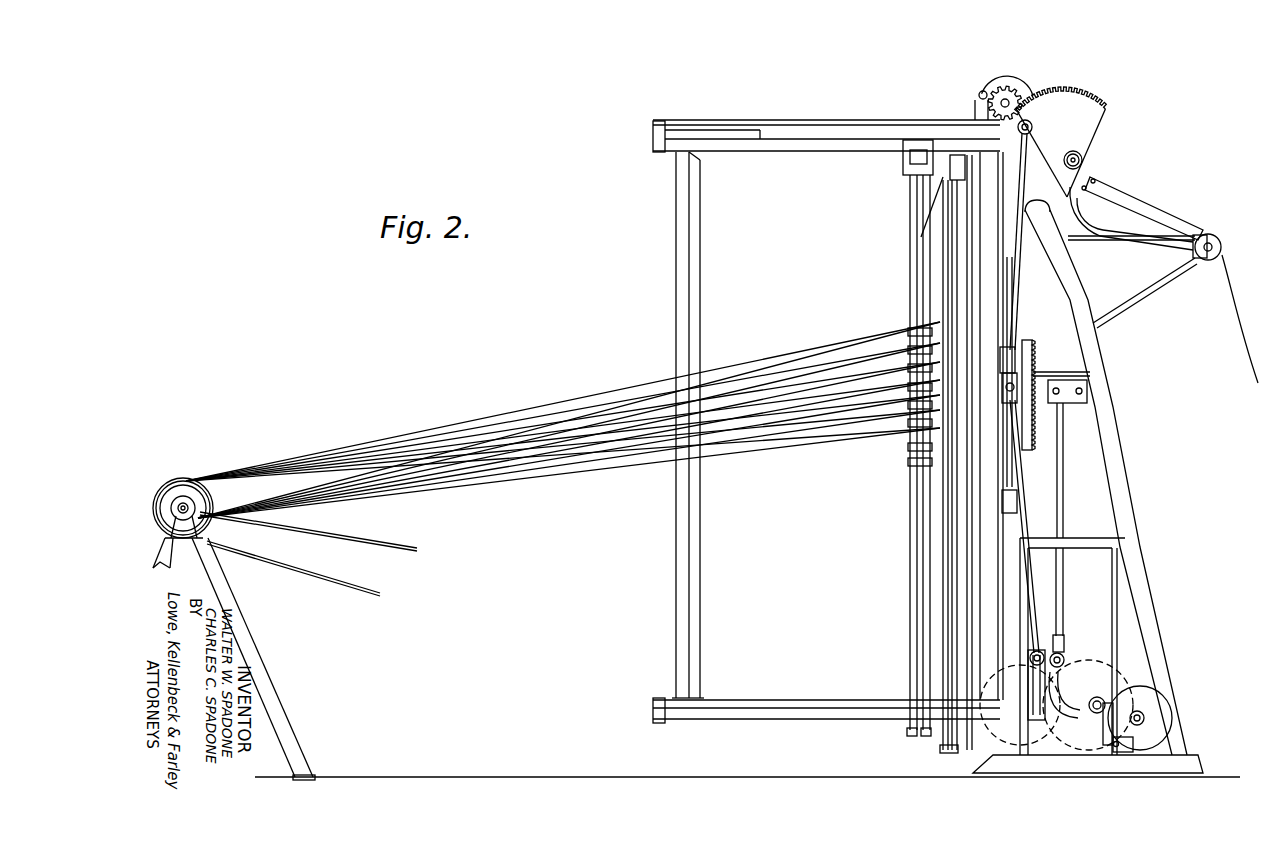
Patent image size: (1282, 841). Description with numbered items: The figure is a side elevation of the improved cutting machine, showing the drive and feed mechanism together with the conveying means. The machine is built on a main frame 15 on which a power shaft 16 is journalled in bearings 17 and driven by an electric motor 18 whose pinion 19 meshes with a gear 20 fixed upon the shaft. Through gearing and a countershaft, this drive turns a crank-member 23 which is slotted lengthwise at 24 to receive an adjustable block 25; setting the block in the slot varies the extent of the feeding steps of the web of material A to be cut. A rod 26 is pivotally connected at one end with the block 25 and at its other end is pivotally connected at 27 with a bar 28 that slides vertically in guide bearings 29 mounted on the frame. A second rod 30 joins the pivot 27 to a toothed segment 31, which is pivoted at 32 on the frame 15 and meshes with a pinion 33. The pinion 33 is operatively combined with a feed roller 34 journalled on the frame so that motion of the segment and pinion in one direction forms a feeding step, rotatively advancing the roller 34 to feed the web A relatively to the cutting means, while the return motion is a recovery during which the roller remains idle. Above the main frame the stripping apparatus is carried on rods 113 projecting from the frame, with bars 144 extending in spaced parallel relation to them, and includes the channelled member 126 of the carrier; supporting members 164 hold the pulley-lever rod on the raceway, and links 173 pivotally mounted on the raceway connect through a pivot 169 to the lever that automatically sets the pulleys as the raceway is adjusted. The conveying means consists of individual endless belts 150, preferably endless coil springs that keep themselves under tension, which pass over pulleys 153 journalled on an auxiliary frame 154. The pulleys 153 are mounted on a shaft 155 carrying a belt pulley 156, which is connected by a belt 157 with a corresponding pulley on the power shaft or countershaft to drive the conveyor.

The main frame 15 is at (1140, 553).
The power shaft 16 is at (1100, 700).
The bearings 17 is at (1107, 717).
The electric motor 18 is at (1150, 683).
The pinion 19 is at (1150, 720).
The gear 20 is at (1090, 675).
The crank-member 23 is at (1050, 683).
The slot 24 is at (1033, 700).
The adjustable block 25 is at (1050, 657).
The rod 26 is at (1035, 595).
The pivot 27 is at (1027, 373).
The bar 28 is at (1010, 472).
The guide bearings 29 is at (1015, 365).
The second rod 30 is at (1018, 288).
The toothed segment 31 is at (1095, 119).
The pivot 32 is at (1085, 160).
The pinion 33 is at (1012, 92).
The feed roller 34 is at (995, 75).
The rods 113 is at (790, 137).
The channelled member 126 is at (695, 335).
The bars 144 is at (875, 123).
The endless belts 150 is at (590, 470).
The pulleys 153 is at (172, 498).
The auxiliary frame 154 is at (237, 620).
The shaft 155 is at (167, 520).
The belt pulley 156 is at (173, 480).
The belt 157 is at (373, 540).
The supporting members 164 is at (907, 157).
The pivot 169 is at (965, 318).
The links 173 is at (947, 168).
The web of material A is at (1238, 338).